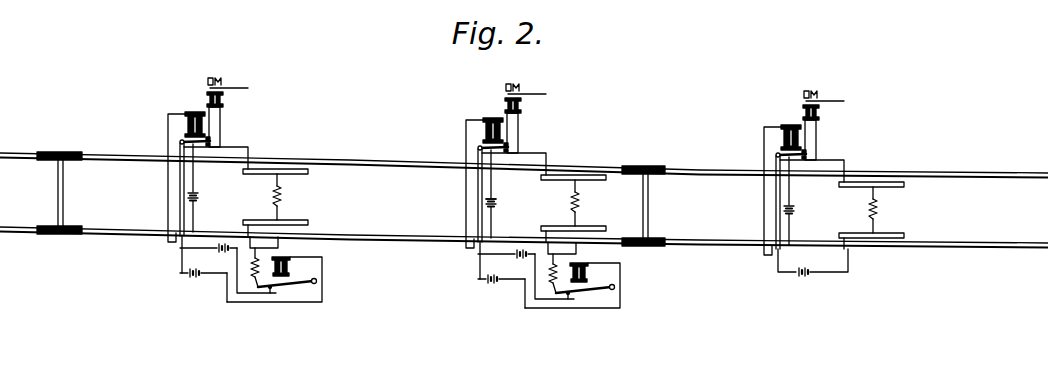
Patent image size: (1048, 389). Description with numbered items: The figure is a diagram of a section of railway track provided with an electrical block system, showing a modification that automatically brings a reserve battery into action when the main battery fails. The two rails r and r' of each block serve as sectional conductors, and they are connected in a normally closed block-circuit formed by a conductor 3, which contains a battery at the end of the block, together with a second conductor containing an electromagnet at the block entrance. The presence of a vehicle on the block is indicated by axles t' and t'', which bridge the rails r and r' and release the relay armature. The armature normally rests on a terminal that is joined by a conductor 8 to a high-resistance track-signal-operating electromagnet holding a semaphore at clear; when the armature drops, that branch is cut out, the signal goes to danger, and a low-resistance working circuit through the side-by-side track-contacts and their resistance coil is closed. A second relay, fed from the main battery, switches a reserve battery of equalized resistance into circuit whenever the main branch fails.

The conductor 3 is at (504, 189).
The conductor 8 is at (500, 106).
The rail r is at (524, 157).
The rail r' is at (524, 247).
The axle t' is at (644, 206).
The axle t'' is at (60, 193).